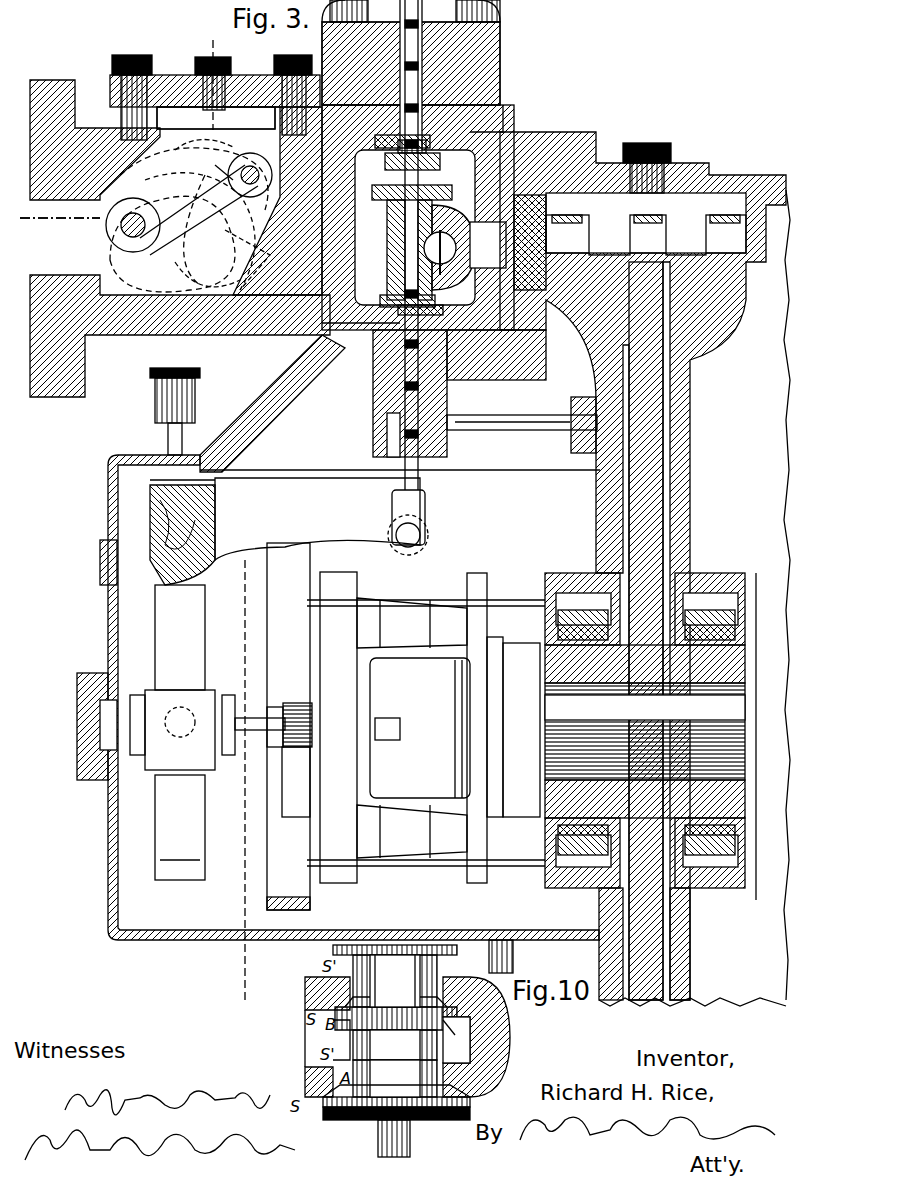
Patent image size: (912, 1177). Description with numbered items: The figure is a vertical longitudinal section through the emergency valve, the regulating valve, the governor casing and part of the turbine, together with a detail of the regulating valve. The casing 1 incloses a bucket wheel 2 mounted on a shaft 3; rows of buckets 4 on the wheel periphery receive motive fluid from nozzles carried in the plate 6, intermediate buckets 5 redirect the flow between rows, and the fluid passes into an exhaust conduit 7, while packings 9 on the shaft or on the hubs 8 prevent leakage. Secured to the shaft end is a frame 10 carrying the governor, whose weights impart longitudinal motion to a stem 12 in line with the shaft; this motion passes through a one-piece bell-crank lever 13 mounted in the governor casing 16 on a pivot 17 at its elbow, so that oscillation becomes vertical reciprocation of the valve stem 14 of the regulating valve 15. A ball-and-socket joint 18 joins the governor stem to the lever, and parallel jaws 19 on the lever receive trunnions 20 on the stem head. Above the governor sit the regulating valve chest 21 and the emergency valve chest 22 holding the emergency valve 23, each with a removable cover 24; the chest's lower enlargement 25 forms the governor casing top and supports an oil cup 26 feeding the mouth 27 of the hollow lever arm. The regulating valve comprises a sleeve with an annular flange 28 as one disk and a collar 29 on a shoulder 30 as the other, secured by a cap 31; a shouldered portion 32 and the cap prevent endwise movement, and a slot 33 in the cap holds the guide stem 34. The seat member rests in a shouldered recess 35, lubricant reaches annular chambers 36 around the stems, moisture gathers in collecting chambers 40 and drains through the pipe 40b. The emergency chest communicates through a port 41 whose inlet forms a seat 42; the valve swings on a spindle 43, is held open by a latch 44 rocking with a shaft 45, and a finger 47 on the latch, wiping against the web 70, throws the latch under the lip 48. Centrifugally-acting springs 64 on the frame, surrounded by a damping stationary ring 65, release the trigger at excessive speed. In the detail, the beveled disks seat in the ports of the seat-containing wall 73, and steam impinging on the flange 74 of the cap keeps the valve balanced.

In FIG. 3, the casing 1 is at (598, 140).
In FIG. 3, the bucket wheel 2 is at (658, 388).
In FIG. 3, the shaft 3 is at (645, 731).
In FIG. 3, the buckets 4 is at (646, 234).
In FIG. 3, the intermediate buckets 5 is at (390, 195).
In FIG. 3, the plate 6 is at (546, 212).
In FIG. 3, the exhaust conduit 7 is at (781, 595).
In FIG. 3, the hubs 8 is at (548, 665).
In FIG. 3, the packings 9 is at (572, 600).
In FIG. 3, the frame 10 is at (345, 862).
In FIG. 3, the stem 12 is at (253, 732).
In FIG. 3, the bell-crank lever 13 is at (180, 732).
In FIG. 3, the valve stem 14 is at (420, 470).
In FIG. 10, the valve stem 14 is at (412, 1140).
In FIG. 3, the regulating valve 15 is at (456, 262).
In FIG. 10, the regulating valve 15 is at (395, 1045).
In FIG. 3, the governor casing 16 is at (108, 598).
In FIG. 3, the pivot 17 is at (212, 512).
In FIG. 3, the ball-and-socket joint 18 is at (186, 735).
In FIG. 3, the parallel jaws 19 is at (420, 525).
In FIG. 3, the trunnions 20 is at (320, 519).
In FIG. 3, the regulating valve chest 21 is at (505, 128).
In FIG. 3, the emergency valve chest 22 is at (175, 115).
In FIG. 3, the emergency valve 23 is at (238, 212).
In FIG. 3, the removable cover 24 is at (240, 82).
In FIG. 3, the shell or enlargement 25 is at (272, 403).
In FIG. 3, the oil cup 26 is at (152, 406).
In FIG. 3, the mouth 27 is at (160, 492).
In FIG. 3, the annular flange 28 is at (438, 300).
In FIG. 10, the annular flange 28 is at (360, 1122).
In FIG. 3, the collar 29 is at (440, 240).
In FIG. 10, the collar 29 is at (450, 1022).
In FIG. 3, the shoulder 30 is at (449, 247).
In FIG. 10, the shoulder 30 is at (455, 1037).
In FIG. 3, the cap 31 is at (438, 203).
In FIG. 10, the cap 31 is at (440, 975).
In FIG. 3, the shouldered portion 32 is at (448, 212).
In FIG. 3, the slot 33 is at (432, 182).
In FIG. 3, the guide stem 34 is at (416, 158).
In FIG. 3, the shouldered recess 35 is at (362, 326).
In FIG. 3, the annular passages or chambers 36 is at (407, 224).
In FIG. 3, the collecting chambers 40 is at (373, 428).
In FIG. 3, the pipe 40b is at (520, 425).
In FIG. 3, the port 41 is at (245, 230).
In FIG. 3, the seat 42 is at (246, 250).
In FIG. 3, the spindle 43 is at (262, 160).
In FIG. 3, the latch or lock 44 is at (195, 272).
In FIG. 3, the shaft 45 is at (125, 235).
In FIG. 3, the projection or finger 47 is at (205, 165).
In FIG. 3, the lip 48 is at (145, 255).
In FIG. 3, the centrifugally-acting springs 64 is at (297, 760).
In FIG. 3, the stationary ring 65 is at (310, 902).
In FIG. 3, the web or abutment 70 is at (228, 150).
In FIG. 10, the seat-containing wall or diaphragm 73 is at (505, 1048).
In FIG. 3, the flange 74 is at (378, 192).
In FIG. 10, the flange 74 is at (333, 950).